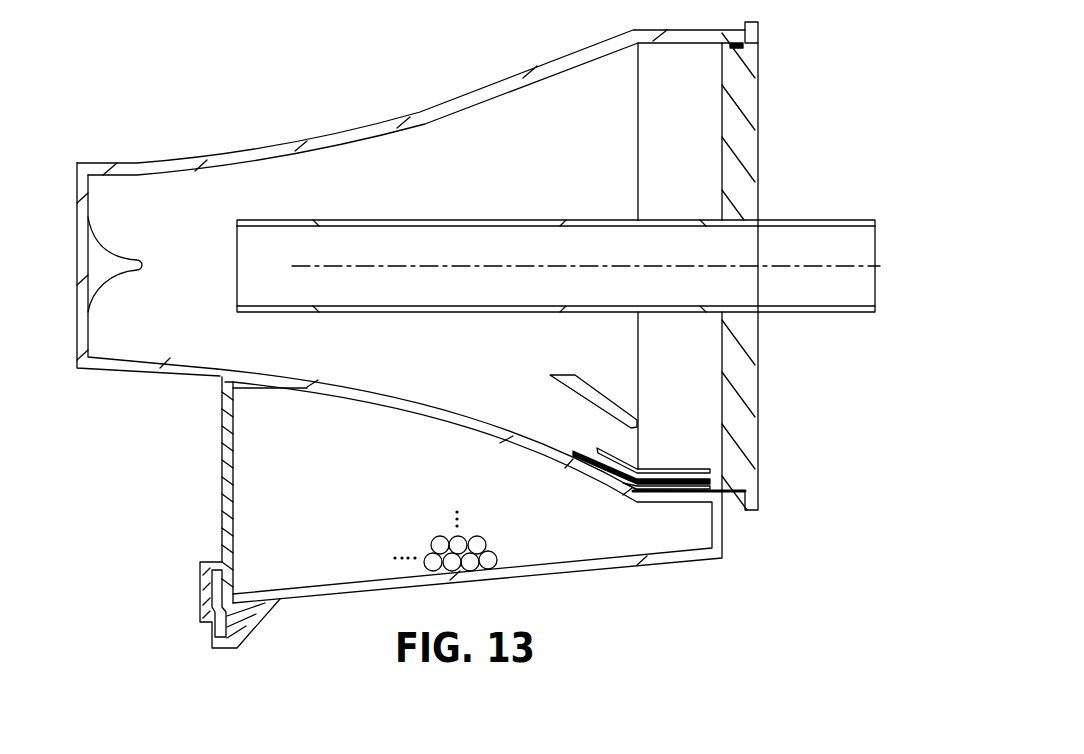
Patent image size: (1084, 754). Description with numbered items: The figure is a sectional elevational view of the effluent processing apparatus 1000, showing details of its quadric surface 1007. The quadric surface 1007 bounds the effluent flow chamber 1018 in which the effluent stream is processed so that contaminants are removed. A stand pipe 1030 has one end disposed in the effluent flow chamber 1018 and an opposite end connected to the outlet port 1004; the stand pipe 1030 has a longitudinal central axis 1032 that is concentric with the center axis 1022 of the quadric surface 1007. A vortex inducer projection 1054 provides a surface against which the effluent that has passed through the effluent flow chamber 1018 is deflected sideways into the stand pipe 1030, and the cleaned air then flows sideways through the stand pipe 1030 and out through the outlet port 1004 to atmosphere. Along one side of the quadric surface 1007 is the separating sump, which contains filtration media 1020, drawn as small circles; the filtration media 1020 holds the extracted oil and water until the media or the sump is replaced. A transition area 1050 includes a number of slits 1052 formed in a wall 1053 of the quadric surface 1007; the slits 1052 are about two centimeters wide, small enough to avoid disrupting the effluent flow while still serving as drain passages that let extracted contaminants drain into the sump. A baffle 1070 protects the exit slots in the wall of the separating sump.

The effluent processing apparatus 1000 is at (152, 72).
The quadric surface 1007 is at (473, 100).
The vortex inducer projection 1054 is at (98, 262).
The stand pipe 1030 is at (580, 220).
The outlet port portion 1004 is at (876, 247).
The center axis 1022 is at (770, 262).
The longitudinal central axis 1032 is at (380, 266).
The effluent flow chamber 1018 is at (433, 188).
The wall 1053 is at (617, 440).
The transition area 1050 is at (721, 457).
The slits 1052 is at (668, 445).
The filtration media 1020 is at (470, 565).
The baffle 1070 is at (200, 590).